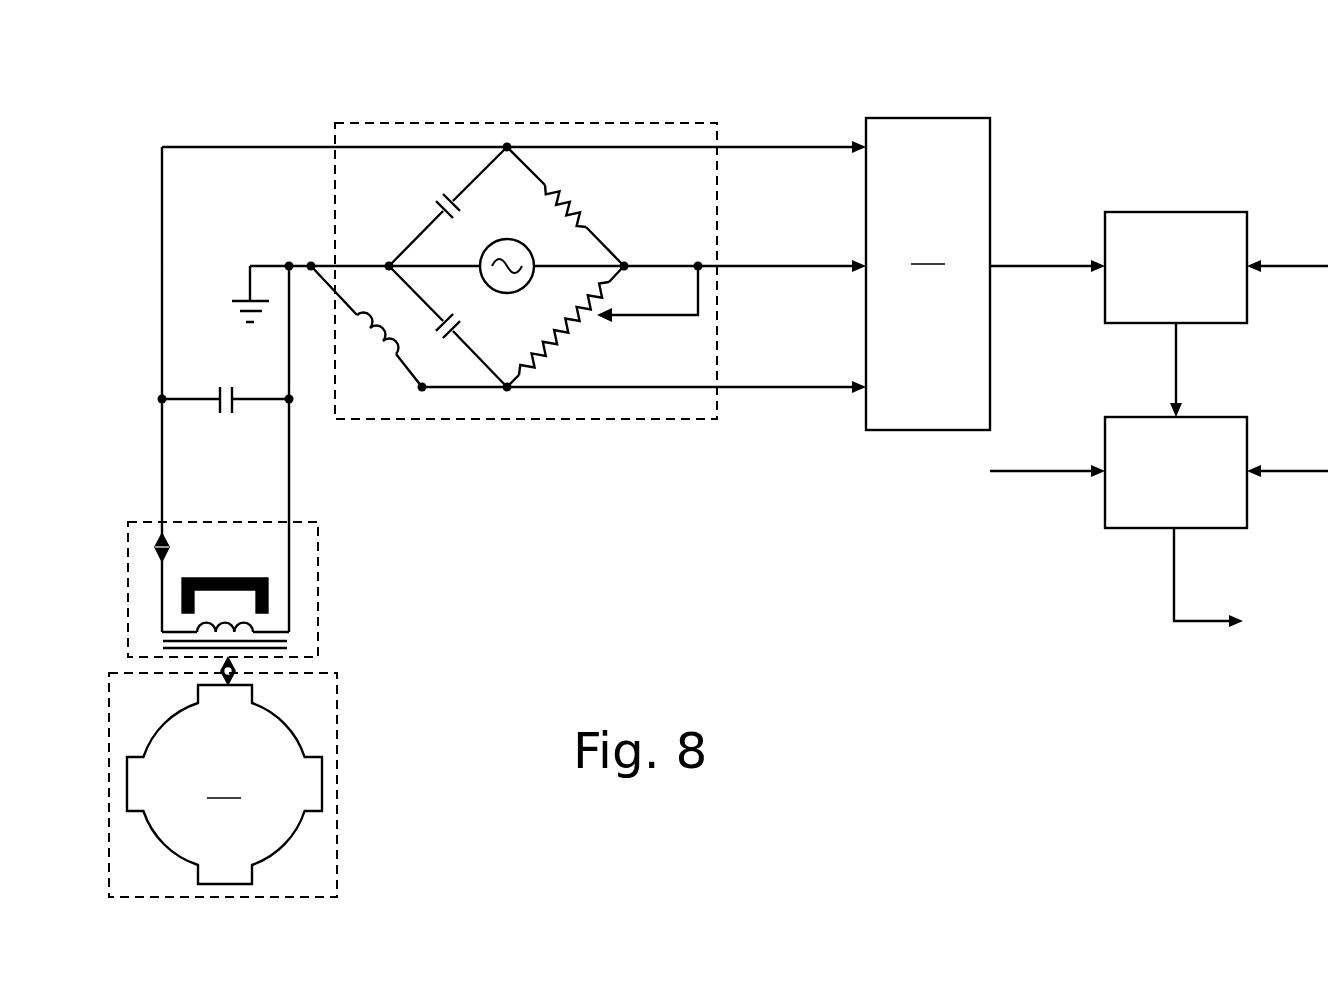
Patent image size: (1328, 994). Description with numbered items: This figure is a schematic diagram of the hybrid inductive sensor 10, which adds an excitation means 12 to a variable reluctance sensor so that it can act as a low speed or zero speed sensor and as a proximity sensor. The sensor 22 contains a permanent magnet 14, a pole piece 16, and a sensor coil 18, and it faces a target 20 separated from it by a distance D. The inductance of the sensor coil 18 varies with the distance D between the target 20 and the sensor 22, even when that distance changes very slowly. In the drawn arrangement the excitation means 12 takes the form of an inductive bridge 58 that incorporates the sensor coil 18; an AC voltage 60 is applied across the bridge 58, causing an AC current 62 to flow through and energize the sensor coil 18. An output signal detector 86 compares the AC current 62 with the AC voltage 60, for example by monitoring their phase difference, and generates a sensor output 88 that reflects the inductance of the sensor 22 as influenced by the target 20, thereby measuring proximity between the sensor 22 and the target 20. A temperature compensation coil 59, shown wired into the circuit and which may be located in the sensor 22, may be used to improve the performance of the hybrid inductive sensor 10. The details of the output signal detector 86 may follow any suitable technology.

The hybrid inductive sensor 10 is at (841, 697).
The excitation means 12 is at (498, 121).
The permanent magnet 14 is at (270, 588).
The pole piece 16 is at (287, 641).
The sensor coil 18 is at (270, 620).
The target 20 is at (223, 785).
The sensor 22 is at (318, 522).
The inductive bridge 58 is at (618, 187).
The temperature compensation coil 59 is at (385, 350).
The AC voltage 60 is at (505, 295).
The AC current 62 is at (128, 555).
The output signal detector 86 is at (928, 274).
The sensor output 88 is at (1044, 265).
The distance D is at (240, 672).